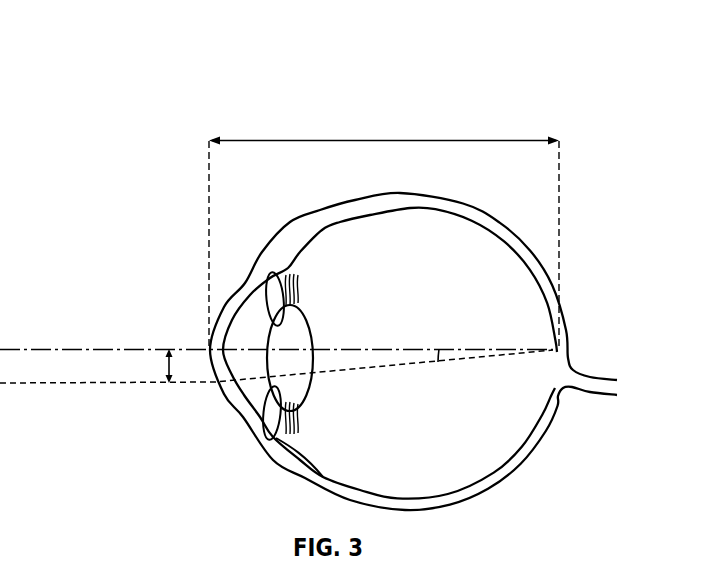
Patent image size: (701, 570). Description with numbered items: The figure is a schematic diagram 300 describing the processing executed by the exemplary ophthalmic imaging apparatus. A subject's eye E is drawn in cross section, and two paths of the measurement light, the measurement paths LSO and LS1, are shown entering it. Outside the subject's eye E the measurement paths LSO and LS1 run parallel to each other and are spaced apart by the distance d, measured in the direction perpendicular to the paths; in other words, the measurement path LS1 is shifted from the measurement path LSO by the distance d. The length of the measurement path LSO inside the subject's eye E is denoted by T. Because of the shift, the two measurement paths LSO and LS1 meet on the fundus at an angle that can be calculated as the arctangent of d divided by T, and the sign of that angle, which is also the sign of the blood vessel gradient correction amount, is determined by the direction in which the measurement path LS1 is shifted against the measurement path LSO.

The schematic diagram 300 is at (96, 113).
The subject's eye E is at (512, 470).
The measurement path LSO is at (118, 348).
The measurement path LS1 is at (52, 383).
The distance d is at (160, 366).
The length of the measurement path LS0 inside the subject's eye T is at (384, 228).